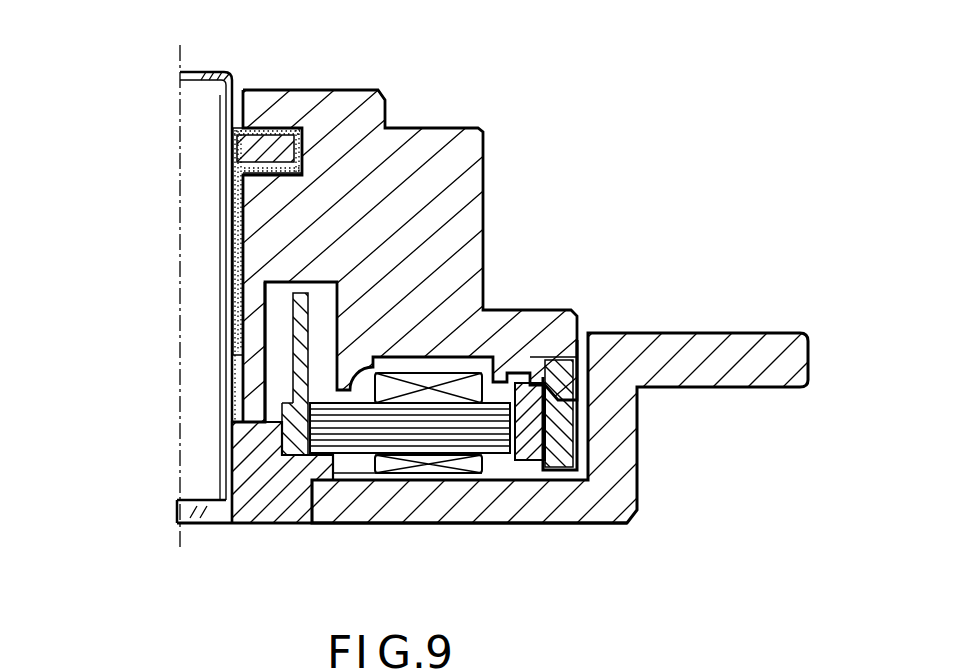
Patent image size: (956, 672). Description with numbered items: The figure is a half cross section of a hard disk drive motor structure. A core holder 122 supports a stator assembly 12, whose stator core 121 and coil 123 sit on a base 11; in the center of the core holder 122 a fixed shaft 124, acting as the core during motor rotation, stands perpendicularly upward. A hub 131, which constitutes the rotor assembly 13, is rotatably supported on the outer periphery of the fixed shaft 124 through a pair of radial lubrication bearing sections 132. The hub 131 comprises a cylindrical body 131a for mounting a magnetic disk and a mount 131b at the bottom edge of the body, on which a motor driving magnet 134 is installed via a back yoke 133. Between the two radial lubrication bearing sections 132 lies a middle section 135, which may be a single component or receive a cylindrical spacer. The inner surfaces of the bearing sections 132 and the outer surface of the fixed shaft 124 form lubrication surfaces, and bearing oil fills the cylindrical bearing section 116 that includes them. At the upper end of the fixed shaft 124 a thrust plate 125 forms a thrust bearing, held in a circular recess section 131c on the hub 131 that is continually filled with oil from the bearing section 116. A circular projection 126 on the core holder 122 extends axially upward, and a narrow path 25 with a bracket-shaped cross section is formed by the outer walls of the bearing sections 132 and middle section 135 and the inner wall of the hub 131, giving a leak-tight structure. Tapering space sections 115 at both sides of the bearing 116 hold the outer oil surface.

The housing 11 is at (397, 512).
The stator assembly 12 is at (358, 455).
The rotor assembly 13 is at (395, 126).
The narrow path 25 is at (233, 423).
The tapering space section 115 is at (238, 127).
The cylindrical bearing section 116 is at (232, 313).
The rotor core 121 is at (500, 443).
The core holder 122 is at (277, 493).
The coil 123 is at (457, 465).
The fixed shaft 124 is at (193, 413).
The thrust plate 125 is at (276, 145).
The circular projection 126 is at (297, 293).
The hub 131 is at (470, 150).
The cylindrical body 131a is at (458, 243).
The mount 131b is at (553, 327).
The circular recess section 131c is at (300, 130).
The radial lubrication bearing section 132 is at (237, 185).
The back yoke 133 is at (560, 408).
The motor driving magnet 134 is at (535, 463).
The middle section 135 is at (252, 290).